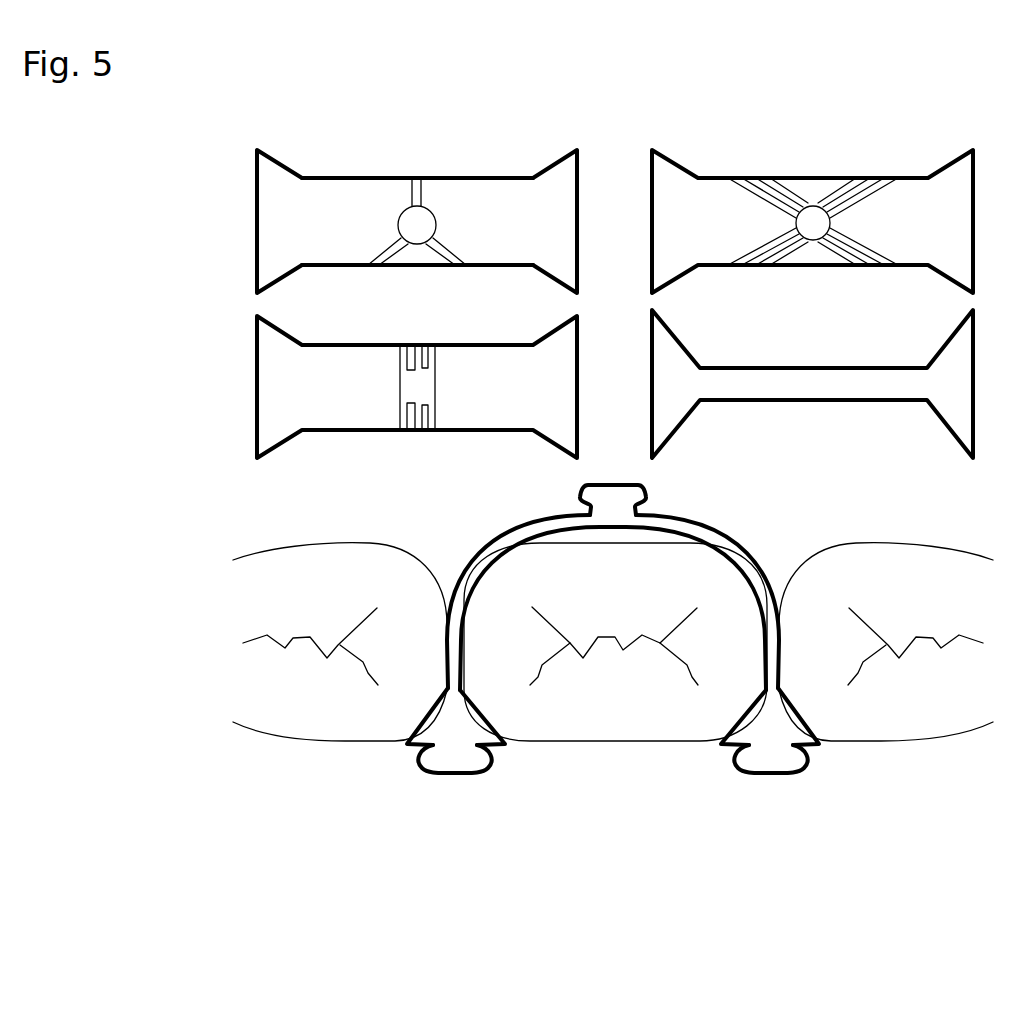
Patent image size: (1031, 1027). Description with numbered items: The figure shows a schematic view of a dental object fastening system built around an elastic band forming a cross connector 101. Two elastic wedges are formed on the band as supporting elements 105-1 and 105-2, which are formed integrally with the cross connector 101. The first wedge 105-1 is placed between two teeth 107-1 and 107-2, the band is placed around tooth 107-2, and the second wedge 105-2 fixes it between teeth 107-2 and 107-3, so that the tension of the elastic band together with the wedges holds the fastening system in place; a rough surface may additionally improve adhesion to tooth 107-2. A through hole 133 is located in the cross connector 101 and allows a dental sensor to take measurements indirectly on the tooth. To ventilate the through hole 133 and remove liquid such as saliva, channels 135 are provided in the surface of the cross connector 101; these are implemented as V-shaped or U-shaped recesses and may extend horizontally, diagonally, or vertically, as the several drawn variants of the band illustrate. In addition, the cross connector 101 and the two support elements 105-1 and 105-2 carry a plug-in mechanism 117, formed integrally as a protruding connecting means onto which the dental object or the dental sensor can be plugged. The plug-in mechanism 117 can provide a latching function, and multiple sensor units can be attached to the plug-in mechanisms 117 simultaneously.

The cross connector 101 is at (337, 212).
The first support element 105-1 is at (268, 202).
The second support element 105-2 is at (562, 203).
The first tooth 107-1 is at (325, 708).
The second tooth 107-2 is at (637, 707).
The third tooth 107-3 is at (897, 712).
The plug-in mechanism 117 is at (620, 494).
The through hole 133 is at (427, 218).
The channels 135 is at (413, 185).